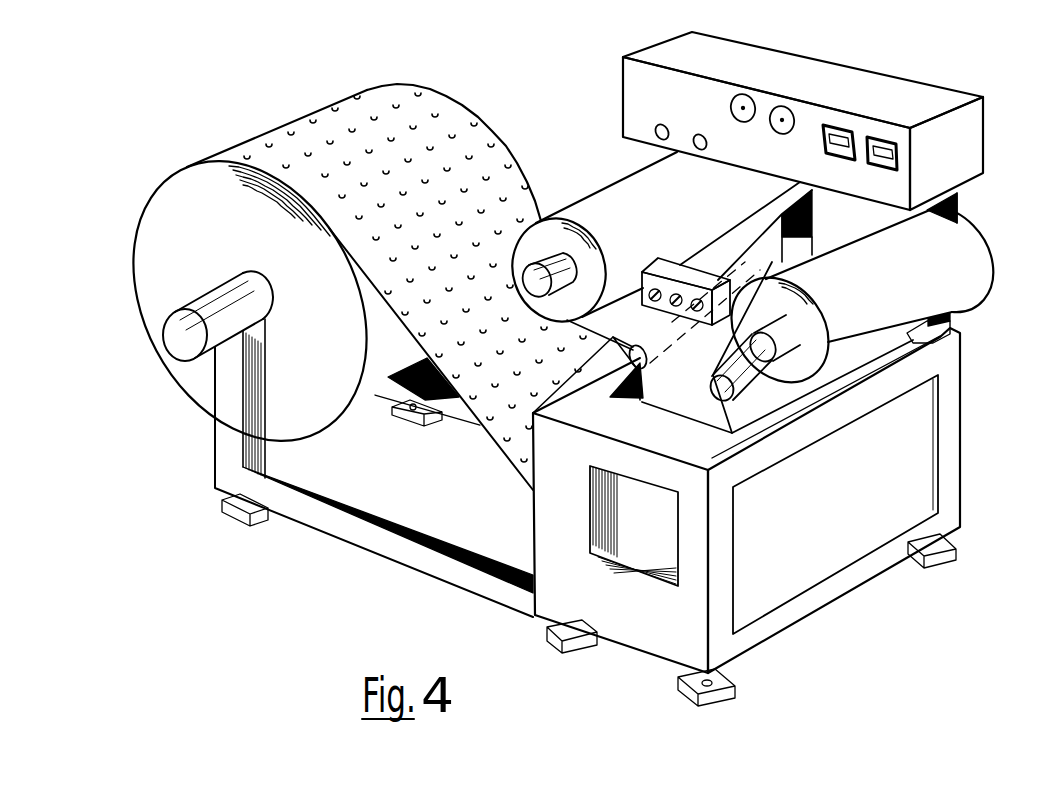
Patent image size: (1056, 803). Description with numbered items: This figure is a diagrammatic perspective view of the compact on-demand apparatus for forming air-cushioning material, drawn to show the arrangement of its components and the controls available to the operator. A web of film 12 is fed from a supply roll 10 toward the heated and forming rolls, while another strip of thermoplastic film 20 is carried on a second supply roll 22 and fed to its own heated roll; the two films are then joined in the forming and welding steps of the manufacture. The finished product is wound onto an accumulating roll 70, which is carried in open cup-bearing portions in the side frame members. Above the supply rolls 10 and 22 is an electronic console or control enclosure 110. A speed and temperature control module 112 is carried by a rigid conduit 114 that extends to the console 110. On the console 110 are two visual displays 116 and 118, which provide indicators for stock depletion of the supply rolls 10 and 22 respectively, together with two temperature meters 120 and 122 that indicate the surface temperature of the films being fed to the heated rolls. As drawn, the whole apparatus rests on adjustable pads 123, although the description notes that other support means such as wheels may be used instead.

The supply roll 10 is at (582, 195).
The web of film 12 is at (643, 333).
The strip of thermoplastic film 20 is at (772, 400).
The supply roll 22 is at (880, 312).
The accumulating roll 70 is at (187, 367).
The electronic console or control enclosure 110 is at (630, 80).
The speed and temperature control module 112 is at (656, 264).
The rigid conduit 114 is at (738, 220).
The visual display 116 is at (662, 124).
The visual display 118 is at (700, 134).
The temperature meter 120 is at (838, 124).
The temperature meter 122 is at (880, 136).
The adjustable pads 123 is at (266, 521).